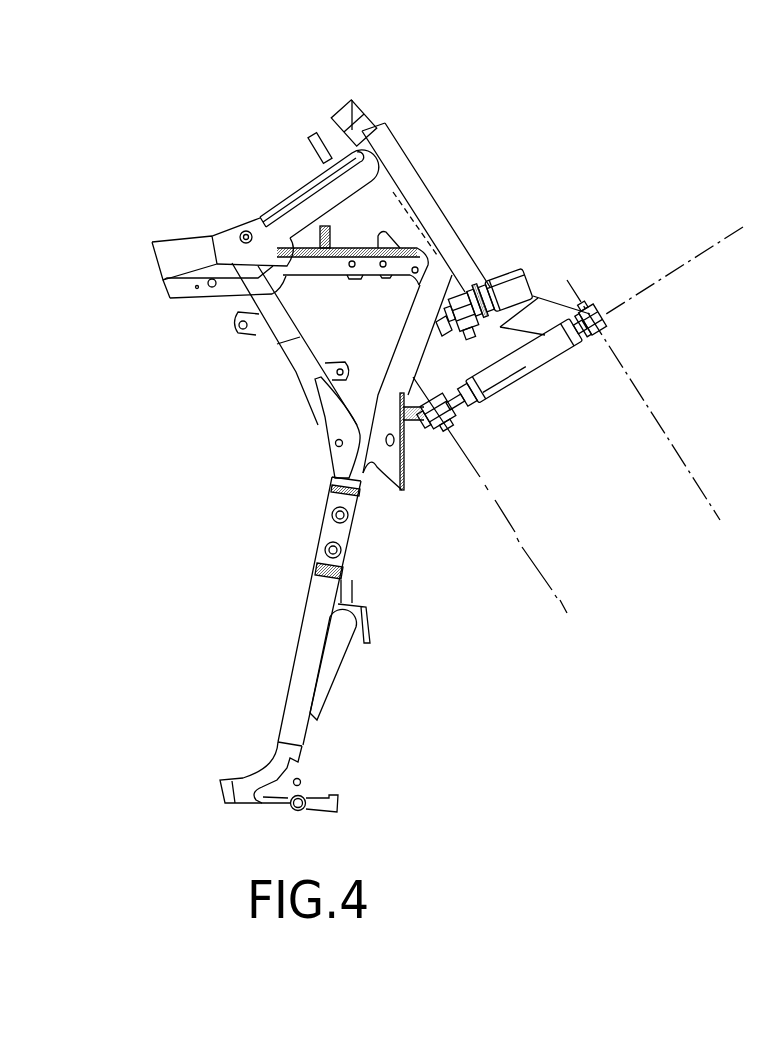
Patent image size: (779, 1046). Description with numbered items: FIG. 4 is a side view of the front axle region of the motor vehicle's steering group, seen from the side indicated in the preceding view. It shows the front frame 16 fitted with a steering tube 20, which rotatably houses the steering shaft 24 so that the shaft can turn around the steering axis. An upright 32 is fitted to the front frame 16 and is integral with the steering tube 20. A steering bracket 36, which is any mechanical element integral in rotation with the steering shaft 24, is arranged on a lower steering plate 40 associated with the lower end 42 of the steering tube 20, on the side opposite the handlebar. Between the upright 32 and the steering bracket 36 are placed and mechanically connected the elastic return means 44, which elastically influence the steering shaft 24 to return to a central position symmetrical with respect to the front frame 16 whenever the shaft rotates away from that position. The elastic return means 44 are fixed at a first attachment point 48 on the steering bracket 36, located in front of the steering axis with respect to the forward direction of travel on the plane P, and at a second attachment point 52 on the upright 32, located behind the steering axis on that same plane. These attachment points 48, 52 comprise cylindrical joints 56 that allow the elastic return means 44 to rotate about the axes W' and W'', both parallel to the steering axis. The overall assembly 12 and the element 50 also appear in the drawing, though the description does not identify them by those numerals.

The kickstand assembly 12 is at (270, 96).
The front frame 16 is at (297, 191).
The steering tube 20 is at (406, 150).
The steering shaft 24 is at (352, 100).
The upright 32 is at (383, 393).
The steering bracket 36 is at (534, 303).
The lower steering plate 40 is at (541, 270).
The lower end 42 is at (492, 268).
The elastic return means 44 is at (522, 410).
The first attachment point 48 is at (585, 354).
The clamp bolt 50 is at (469, 362).
The second attachment point 52 is at (442, 440).
The cylindrical joints 56 is at (558, 447).